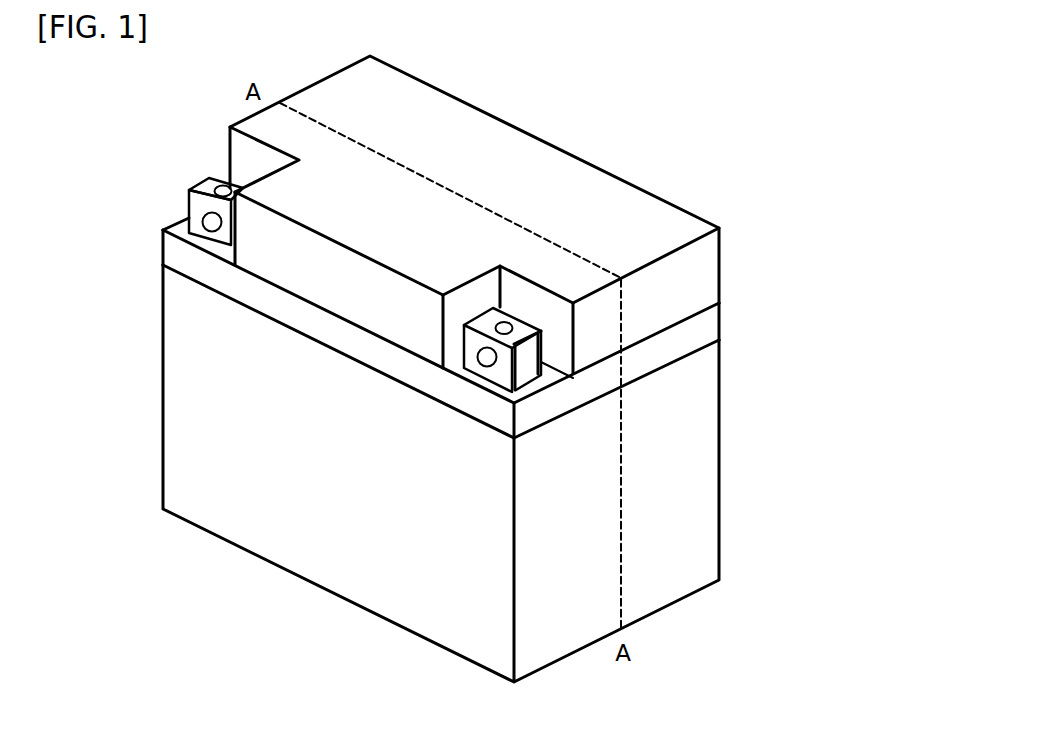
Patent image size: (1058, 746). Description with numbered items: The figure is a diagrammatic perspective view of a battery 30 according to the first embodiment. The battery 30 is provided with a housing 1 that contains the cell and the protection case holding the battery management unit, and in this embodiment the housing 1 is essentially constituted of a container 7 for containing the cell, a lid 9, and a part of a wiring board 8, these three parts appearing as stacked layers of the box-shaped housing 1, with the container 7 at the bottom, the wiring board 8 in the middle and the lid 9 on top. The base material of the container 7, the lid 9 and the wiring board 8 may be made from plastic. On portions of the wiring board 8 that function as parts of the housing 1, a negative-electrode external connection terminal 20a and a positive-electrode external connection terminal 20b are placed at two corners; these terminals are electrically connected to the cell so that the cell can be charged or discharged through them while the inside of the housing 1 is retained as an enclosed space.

The battery 30 is at (668, 134).
The housing 1 is at (768, 254).
The lid 9 is at (697, 287).
The wiring board 8 is at (698, 327).
The container 7 is at (696, 393).
The negative-electrode external connection terminal 20a is at (198, 212).
The positive-electrode external connection terminal 20b is at (523, 330).